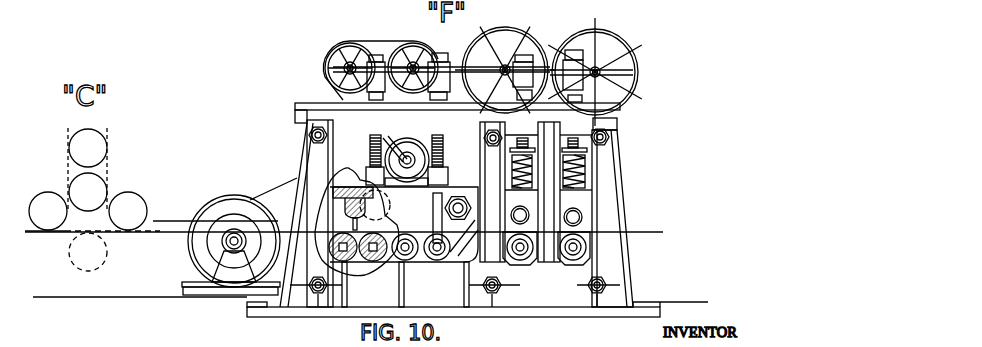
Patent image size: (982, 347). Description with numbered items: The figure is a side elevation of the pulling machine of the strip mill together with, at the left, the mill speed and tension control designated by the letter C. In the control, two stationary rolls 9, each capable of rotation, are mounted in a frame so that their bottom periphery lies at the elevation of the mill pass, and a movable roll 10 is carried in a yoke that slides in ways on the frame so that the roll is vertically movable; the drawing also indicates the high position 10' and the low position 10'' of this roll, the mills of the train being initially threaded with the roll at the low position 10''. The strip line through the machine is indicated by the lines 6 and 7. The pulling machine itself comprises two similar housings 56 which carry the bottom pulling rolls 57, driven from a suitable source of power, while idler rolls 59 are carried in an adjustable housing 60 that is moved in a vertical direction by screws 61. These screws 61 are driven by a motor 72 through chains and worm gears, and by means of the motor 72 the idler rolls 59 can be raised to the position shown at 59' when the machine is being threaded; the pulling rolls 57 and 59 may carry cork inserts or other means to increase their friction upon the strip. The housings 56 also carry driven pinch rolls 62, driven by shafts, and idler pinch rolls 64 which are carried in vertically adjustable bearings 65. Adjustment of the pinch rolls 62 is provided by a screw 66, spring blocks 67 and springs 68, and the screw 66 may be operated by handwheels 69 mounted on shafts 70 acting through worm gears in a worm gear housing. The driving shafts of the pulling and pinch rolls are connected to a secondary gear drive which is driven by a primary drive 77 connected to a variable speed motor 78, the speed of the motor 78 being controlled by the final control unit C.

The pass line 6 is at (176, 235).
The feed table line 7 is at (186, 216).
The stationary rolls 9 is at (57, 180).
The movable roll 10 is at (101, 183).
The high position of movable roll 10' is at (109, 162).
The low position of movable roll 10'' is at (104, 262).
The housings 56 is at (477, 296).
The bottom pulling rolls 57 is at (345, 261).
The idler rolls 59 is at (390, 211).
The raised position of idler rolls 59' is at (369, 222).
The adjustable housing 60 is at (343, 186).
The screws 61 is at (370, 145).
The driven pinch rolls 62 is at (565, 232).
The idler pinch rolls 64 is at (502, 237).
The vertically adjustable bearings 65 is at (535, 208).
The screw 66 is at (514, 153).
The spring blocks 67 is at (513, 165).
The springs 68 is at (526, 169).
The handwheels 69 is at (568, 72).
The shafts 70 is at (497, 76).
The motor 72 is at (418, 157).
The primary drive 77 is at (296, 176).
The variable speed motor 78 is at (222, 199).